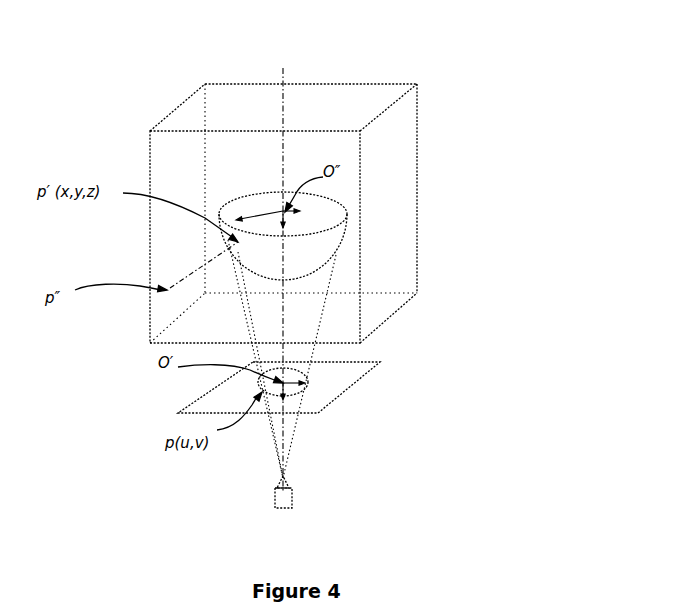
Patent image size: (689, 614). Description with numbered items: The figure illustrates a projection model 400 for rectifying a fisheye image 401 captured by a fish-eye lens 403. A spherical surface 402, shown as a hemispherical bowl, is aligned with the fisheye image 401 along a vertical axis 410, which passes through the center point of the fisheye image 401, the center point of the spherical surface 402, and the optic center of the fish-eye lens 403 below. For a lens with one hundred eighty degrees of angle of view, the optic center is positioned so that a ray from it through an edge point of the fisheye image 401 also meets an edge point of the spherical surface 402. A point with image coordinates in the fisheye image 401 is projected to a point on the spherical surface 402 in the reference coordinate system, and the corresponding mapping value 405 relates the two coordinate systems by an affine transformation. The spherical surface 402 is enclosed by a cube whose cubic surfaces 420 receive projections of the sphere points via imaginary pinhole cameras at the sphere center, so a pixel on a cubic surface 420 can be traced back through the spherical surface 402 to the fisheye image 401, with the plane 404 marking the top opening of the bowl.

The projection model 400 is at (312, 17).
The axis 410 is at (283, 108).
The cubic surface 420 is at (183, 170).
The mapping value 405 is at (252, 206).
The top opening plane of bowl with object coordinate axes 404 is at (325, 212).
The spherical surface 402 is at (312, 247).
The fisheye image 401 is at (332, 402).
The fish-eye lens 403 is at (292, 492).